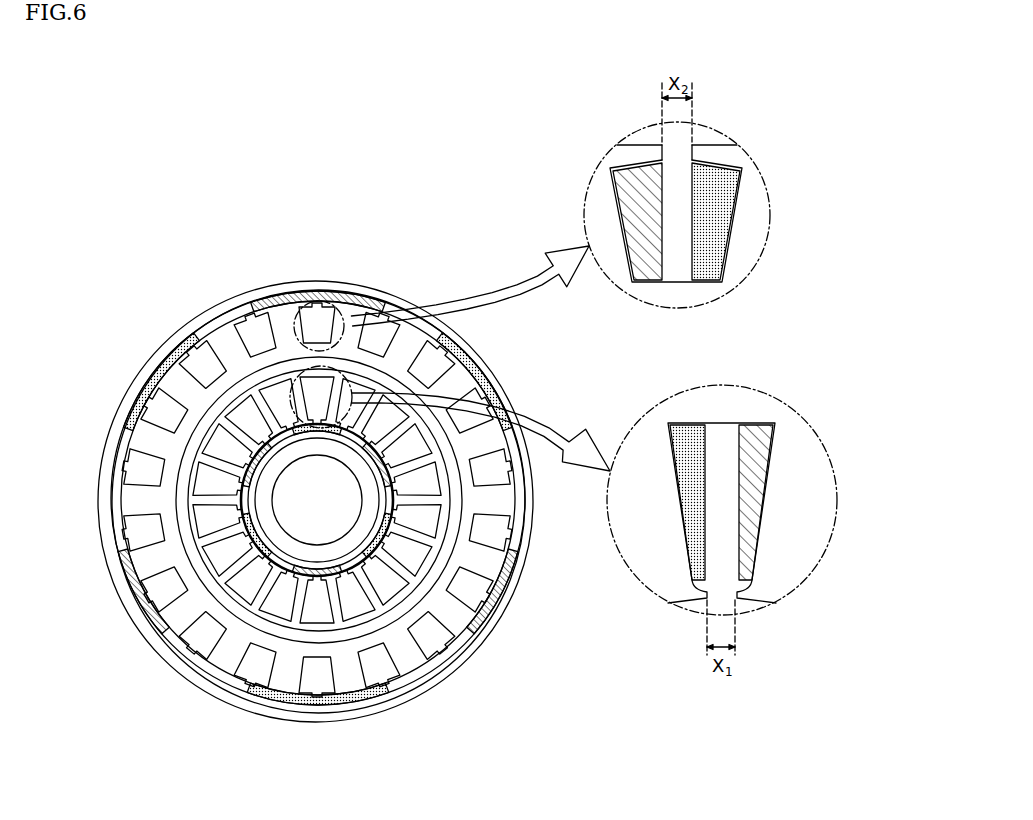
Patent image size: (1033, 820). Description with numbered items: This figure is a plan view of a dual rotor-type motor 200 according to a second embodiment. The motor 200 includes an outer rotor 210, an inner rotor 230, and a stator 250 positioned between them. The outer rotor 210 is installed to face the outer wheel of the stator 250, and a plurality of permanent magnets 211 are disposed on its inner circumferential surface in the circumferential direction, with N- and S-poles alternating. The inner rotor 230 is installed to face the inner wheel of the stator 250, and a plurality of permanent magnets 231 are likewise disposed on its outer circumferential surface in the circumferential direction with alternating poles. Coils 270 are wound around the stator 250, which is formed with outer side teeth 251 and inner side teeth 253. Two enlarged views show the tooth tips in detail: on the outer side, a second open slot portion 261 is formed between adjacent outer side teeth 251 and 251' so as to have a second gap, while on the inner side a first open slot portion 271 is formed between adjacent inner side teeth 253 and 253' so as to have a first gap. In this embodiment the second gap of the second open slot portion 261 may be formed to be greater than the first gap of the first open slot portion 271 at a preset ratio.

The dual rotor-type motor 200 is at (186, 281).
The outer rotor 210 is at (133, 395).
The permanent magnets 211 is at (122, 432).
The inner rotor 230 is at (262, 503).
The permanent magnets 231 is at (238, 484).
The stator 250 is at (330, 204).
The outer side teeth 251 is at (390, 418).
The outer side tooth 251' is at (757, 200).
The inner side teeth 253 is at (449, 437).
The inner side tooth 253' is at (800, 526).
The second open slot portion 261 is at (673, 148).
The coils 270 is at (689, 423).
The first open slot portion 271 is at (723, 592).